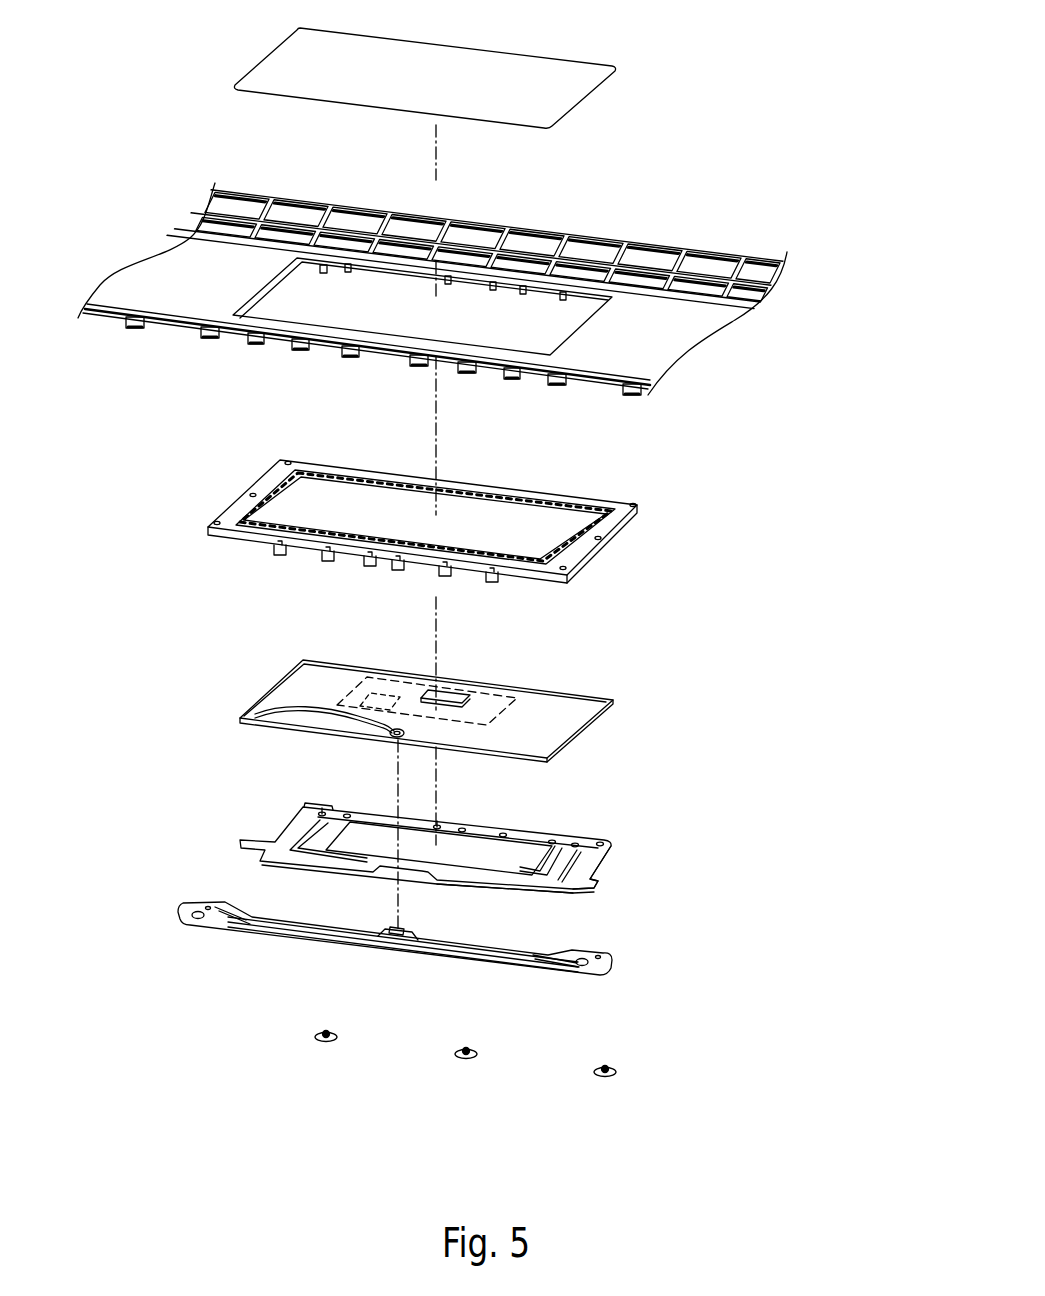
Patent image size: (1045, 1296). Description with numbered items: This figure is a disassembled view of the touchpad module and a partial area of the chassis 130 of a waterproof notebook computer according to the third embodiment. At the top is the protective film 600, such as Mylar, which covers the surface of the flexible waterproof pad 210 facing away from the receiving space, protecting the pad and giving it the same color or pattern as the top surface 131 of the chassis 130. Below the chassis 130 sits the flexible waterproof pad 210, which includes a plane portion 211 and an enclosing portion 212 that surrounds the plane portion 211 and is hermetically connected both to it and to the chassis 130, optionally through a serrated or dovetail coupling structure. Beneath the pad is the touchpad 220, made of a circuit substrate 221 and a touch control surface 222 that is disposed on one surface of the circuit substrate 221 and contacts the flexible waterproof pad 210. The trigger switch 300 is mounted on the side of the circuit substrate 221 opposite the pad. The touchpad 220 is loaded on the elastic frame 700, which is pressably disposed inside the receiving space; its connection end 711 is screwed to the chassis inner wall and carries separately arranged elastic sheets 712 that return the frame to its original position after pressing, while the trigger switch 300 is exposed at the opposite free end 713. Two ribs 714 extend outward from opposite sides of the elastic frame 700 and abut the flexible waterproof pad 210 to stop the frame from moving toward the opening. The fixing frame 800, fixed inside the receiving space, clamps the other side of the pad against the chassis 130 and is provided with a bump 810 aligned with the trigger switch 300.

The protective film 600 is at (280, 70).
The chassis 130 is at (685, 252).
The top surface 131 is at (672, 342).
The flexible waterproof pad 210 is at (361, 503).
The plane portion 211 is at (297, 492).
The enclosing portion 212 is at (233, 510).
The touchpad 220 is at (361, 692).
The circuit substrate 221 is at (292, 683).
The touch control surface 222 is at (308, 668).
The trigger switch 300 is at (260, 712).
The elastic frame 700 is at (420, 852).
The connection end 711 is at (537, 840).
The elastic sheets 712 is at (482, 825).
The free end 713 is at (515, 889).
The ribs 714 is at (584, 881).
The fixing frame 800 is at (350, 918).
The bump 810 is at (402, 930).